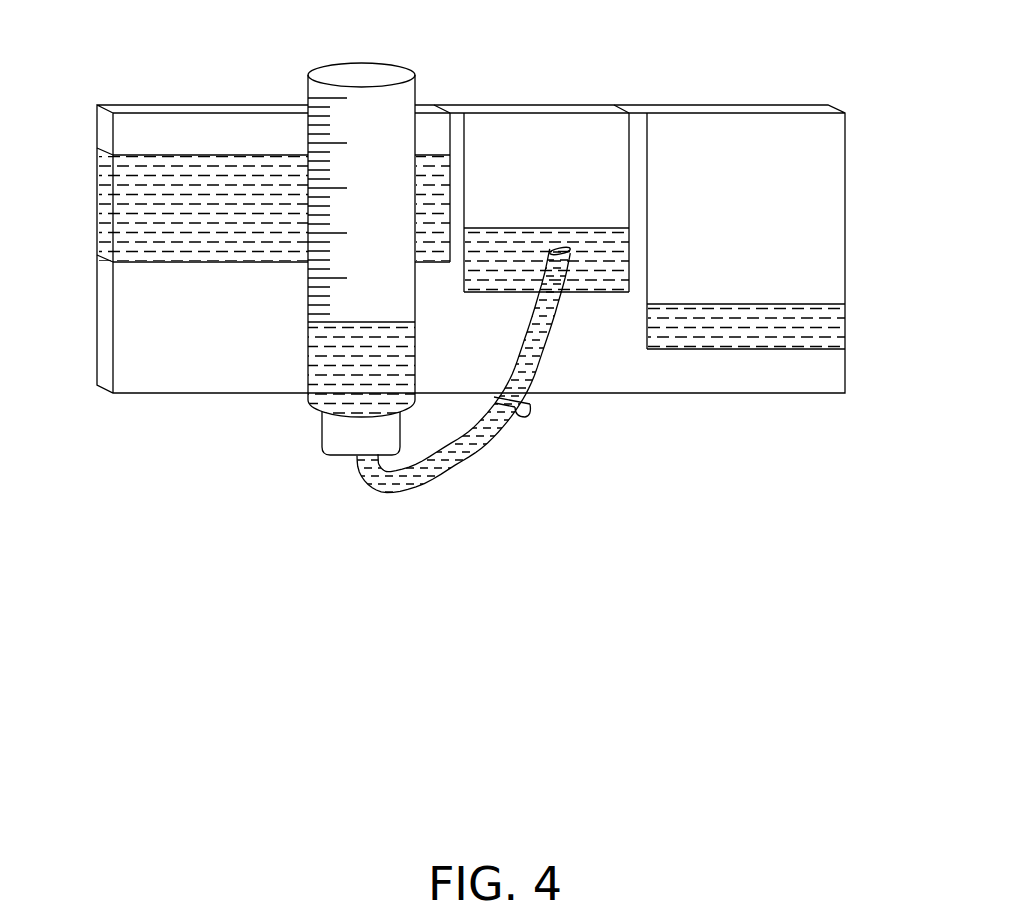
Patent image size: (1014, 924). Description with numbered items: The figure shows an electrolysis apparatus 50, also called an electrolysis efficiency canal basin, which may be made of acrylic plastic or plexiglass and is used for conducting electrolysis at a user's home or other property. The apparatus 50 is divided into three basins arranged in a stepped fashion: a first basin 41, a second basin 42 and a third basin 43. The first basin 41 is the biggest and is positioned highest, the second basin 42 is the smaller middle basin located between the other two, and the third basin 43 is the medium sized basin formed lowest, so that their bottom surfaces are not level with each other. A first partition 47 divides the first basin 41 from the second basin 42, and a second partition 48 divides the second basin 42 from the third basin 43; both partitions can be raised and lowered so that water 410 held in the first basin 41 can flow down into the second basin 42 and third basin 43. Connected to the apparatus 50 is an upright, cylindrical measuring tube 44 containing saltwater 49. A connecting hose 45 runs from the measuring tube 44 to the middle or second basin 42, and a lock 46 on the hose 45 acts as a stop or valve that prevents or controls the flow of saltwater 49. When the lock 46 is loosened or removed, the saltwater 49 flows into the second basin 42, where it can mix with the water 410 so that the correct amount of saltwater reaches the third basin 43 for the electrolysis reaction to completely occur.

The first basin 41 is at (234, 149).
The second basin 42 is at (558, 110).
The third basin 43 is at (590, 256).
The measuring tube 44 is at (298, 315).
The connecting hose 45 is at (425, 506).
The lock 46 is at (537, 425).
The first partition 47 is at (462, 110).
The second partition 48 is at (640, 110).
The saltwater 49 is at (830, 327).
The electrolysis apparatus 50 is at (250, 110).
The water 410 is at (137, 233).